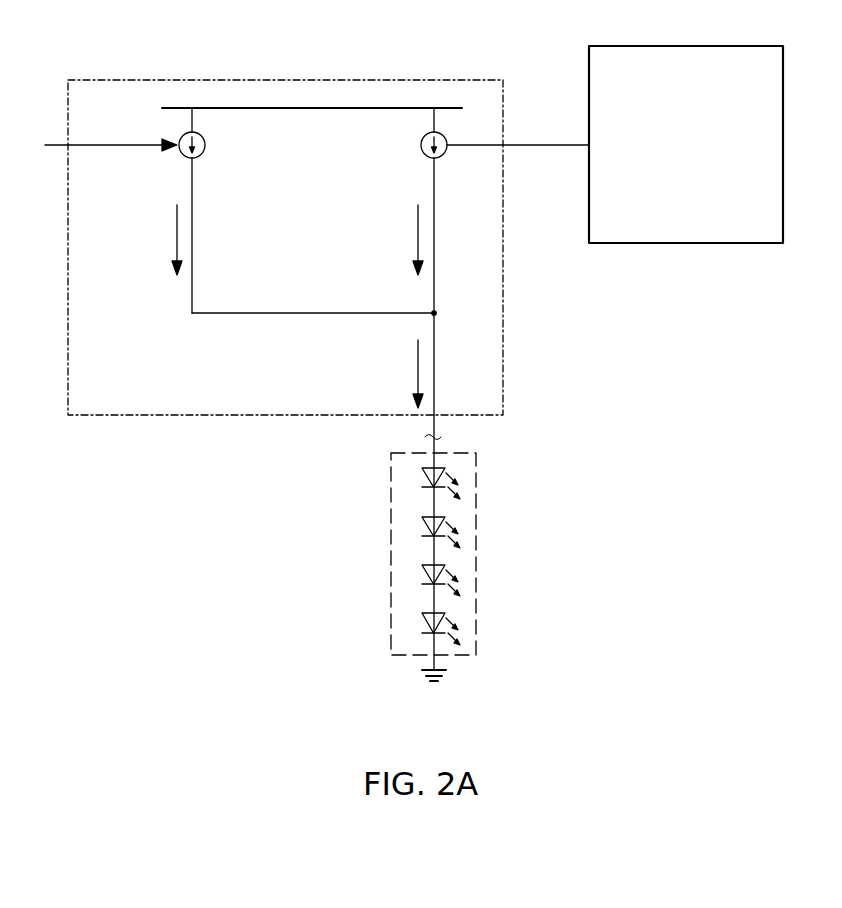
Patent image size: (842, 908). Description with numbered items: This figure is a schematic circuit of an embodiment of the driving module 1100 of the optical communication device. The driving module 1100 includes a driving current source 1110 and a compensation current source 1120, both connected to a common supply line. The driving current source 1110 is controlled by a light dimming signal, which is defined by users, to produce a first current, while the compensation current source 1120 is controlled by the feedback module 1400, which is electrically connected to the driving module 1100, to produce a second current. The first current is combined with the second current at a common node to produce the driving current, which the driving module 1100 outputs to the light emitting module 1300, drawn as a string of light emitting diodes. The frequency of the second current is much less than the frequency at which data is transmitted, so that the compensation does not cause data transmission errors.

The driving module 1100 is at (88, 80).
The driving current source 1110 is at (203, 155).
The compensation current source 1120 is at (428, 157).
The light emitting module 1300 is at (476, 635).
The feedback module 1400 is at (712, 192).